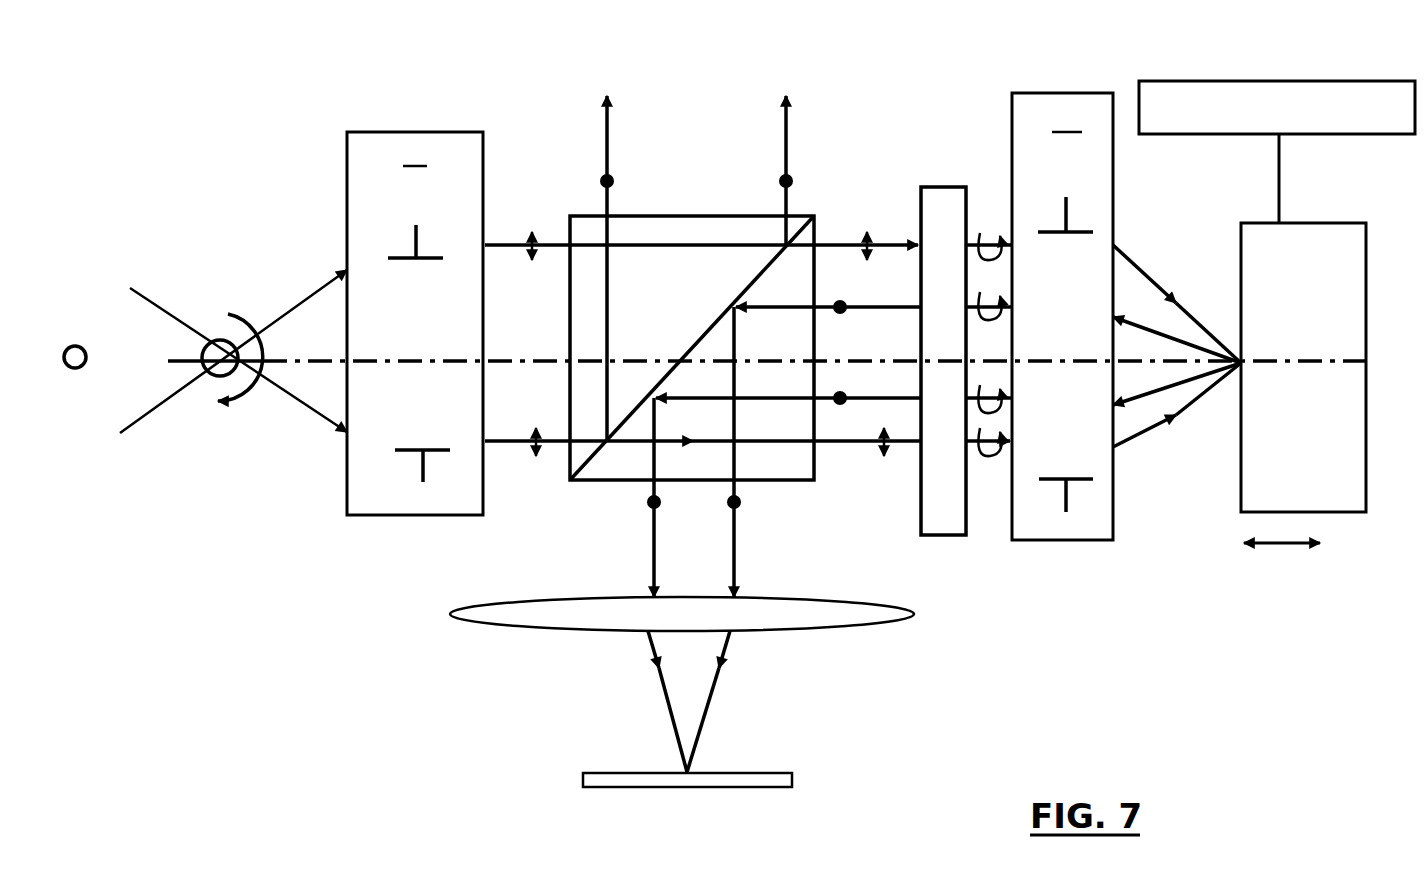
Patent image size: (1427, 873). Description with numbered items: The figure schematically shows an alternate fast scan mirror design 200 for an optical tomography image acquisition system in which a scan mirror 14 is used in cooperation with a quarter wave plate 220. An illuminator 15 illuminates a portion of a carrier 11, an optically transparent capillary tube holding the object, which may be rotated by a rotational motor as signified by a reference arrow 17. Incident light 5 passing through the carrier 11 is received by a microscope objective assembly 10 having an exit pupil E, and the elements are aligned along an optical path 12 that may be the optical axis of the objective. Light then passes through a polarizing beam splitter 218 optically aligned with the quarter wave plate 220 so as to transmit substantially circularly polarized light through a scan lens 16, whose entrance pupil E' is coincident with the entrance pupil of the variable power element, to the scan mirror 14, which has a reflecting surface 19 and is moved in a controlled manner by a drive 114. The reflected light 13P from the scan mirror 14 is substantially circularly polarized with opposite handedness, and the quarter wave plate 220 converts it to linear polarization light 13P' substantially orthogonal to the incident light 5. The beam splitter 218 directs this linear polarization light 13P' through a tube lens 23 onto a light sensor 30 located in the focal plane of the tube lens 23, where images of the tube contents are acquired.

The alternate fast scan mirror design 200 is at (780, 38).
The quarter wave plate 220 is at (942, 187).
The polarizing beam splitter 218 is at (713, 213).
The illuminator 15 is at (78, 345).
The incident light 5 is at (152, 303).
The carrier 11 is at (221, 337).
The reference arrow 17 is at (233, 407).
The microscope objective assembly 10 is at (415, 323).
The optical path 12 is at (528, 370).
The exit pupil E is at (360, 525).
The linear polarization light 13P' is at (830, 452).
The tube lens 23 is at (450, 614).
The light sensor 30 is at (583, 777).
The reflected light 13P is at (964, 555).
The entrance pupil E' is at (1045, 543).
The reflecting surface 19 is at (1240, 463).
The scan lens 16 is at (1062, 316).
The drive 114 is at (1286, 122).
The scan mirror 14 is at (1288, 333).